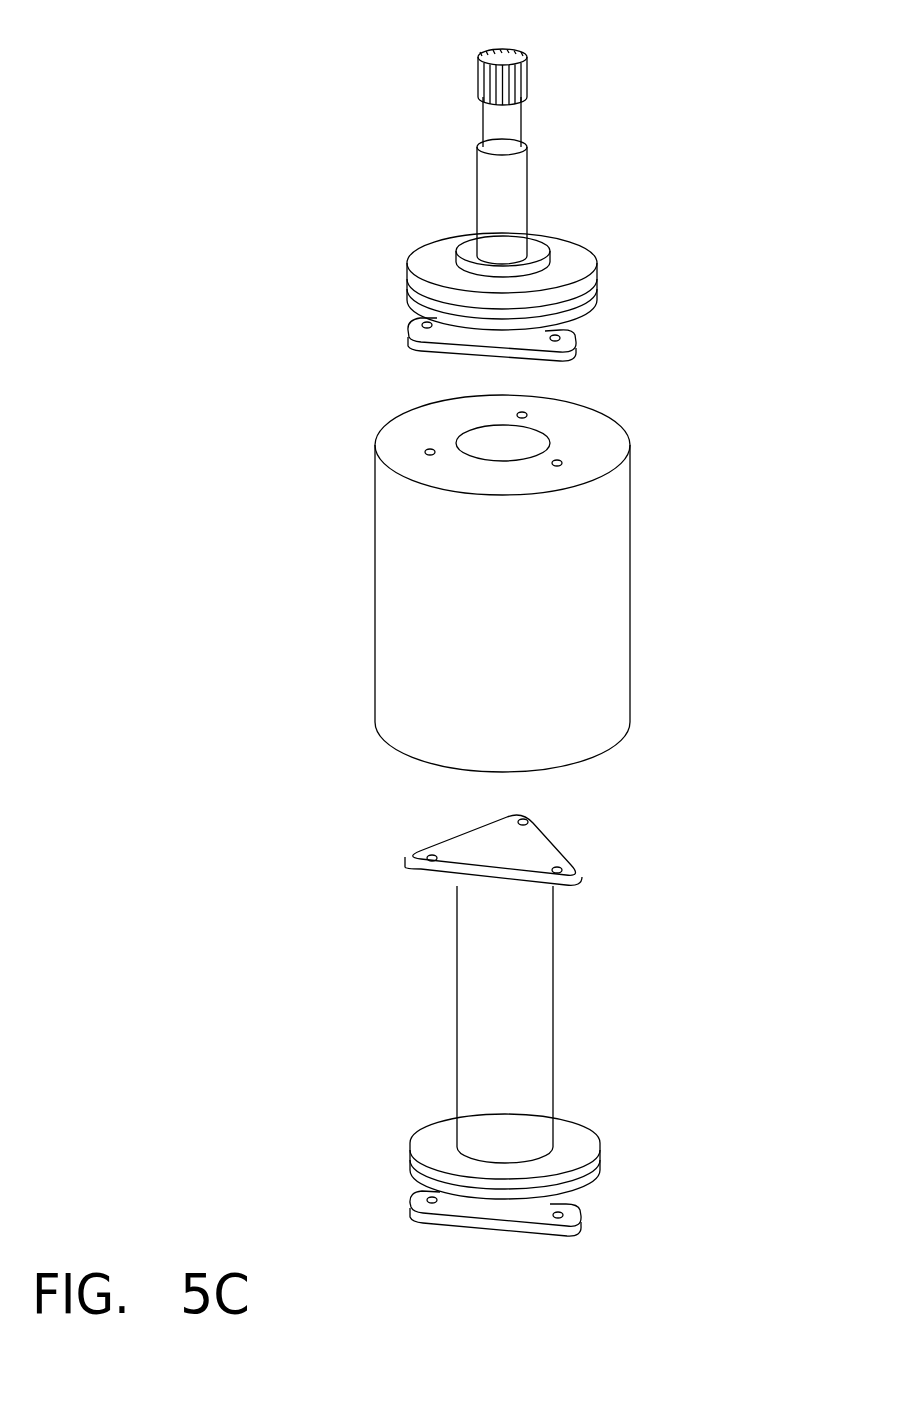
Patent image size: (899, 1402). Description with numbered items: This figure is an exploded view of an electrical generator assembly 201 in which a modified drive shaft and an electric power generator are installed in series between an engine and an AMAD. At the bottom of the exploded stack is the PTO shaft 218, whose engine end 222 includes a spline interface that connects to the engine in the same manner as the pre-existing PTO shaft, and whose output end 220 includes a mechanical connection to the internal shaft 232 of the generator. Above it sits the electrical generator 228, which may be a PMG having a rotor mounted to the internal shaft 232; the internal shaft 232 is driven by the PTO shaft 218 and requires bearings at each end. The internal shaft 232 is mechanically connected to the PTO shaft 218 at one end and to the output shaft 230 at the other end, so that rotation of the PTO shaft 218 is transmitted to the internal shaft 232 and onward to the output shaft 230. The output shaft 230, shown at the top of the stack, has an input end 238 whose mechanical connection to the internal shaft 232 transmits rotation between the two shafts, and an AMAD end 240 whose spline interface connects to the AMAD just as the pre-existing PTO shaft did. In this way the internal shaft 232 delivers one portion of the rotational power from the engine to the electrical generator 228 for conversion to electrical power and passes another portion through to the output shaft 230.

The electrical generator assembly 201 is at (230, 46).
The AMAD end 240 is at (606, 258).
The input end 238 is at (575, 323).
The output shaft 230 is at (483, 345).
The internal shaft 232 is at (537, 440).
The electrical generator 228 is at (613, 578).
The output end 220 is at (558, 840).
The PTO shaft 218 is at (535, 1015).
The engine end 222 is at (402, 1146).